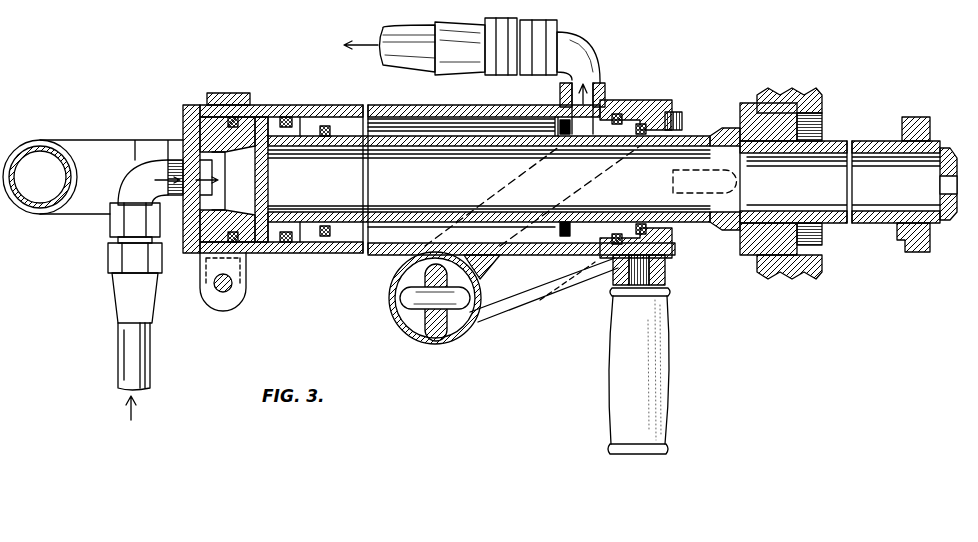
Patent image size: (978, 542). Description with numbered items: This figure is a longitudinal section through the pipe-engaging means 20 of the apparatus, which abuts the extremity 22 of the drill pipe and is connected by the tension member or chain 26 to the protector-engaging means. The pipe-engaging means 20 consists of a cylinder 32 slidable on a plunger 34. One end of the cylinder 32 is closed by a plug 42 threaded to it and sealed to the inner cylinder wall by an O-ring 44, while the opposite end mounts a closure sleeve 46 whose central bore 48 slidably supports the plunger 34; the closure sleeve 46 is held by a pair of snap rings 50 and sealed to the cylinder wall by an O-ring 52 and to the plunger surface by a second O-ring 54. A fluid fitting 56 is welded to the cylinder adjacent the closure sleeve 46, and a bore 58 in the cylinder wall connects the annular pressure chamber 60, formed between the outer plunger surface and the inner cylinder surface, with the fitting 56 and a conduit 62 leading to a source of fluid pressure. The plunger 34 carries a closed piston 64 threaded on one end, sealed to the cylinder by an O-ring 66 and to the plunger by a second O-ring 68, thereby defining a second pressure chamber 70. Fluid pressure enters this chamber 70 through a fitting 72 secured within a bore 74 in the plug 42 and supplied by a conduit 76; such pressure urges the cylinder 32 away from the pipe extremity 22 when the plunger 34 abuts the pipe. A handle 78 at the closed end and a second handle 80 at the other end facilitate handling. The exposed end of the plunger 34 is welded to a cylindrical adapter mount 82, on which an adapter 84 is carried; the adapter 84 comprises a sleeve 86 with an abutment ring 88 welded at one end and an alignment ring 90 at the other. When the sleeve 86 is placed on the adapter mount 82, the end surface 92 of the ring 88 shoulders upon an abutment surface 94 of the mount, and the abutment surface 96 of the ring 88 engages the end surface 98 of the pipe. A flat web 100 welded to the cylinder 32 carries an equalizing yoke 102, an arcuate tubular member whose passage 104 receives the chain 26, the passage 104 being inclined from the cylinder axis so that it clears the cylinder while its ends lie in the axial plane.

The pipe-engaging means 20 is at (322, 94).
The extremity of the drill pipe 22 is at (772, 94).
The tension member 26 is at (458, 306).
The cylinder 32 is at (356, 104).
The plunger 34 is at (404, 211).
The plug 42 is at (183, 124).
The O-ring 44 is at (250, 106).
The closure sleeve 46 is at (654, 110).
The central bore 48 is at (682, 114).
The snap ring 50 is at (609, 108).
The O-ring 52 is at (632, 116).
The O-ring 54 is at (613, 262).
The fluid fitting 56 is at (578, 50).
The bore 58 is at (562, 99).
The annular pressure chamber 60 is at (414, 120).
The conduit 62 is at (405, 30).
The piston 64 is at (262, 196).
The O-ring 66 is at (286, 253).
The O-ring 68 is at (324, 249).
The second pressure chamber 70 is at (203, 254).
The fitting 72 is at (138, 176).
The bore 74 is at (200, 103).
The conduit 76 is at (120, 358).
The handle 78 is at (42, 146).
The second handle 80 is at (622, 351).
The adapter mount 82 is at (936, 150).
The adapter 84 is at (874, 128).
The sleeve 86 is at (838, 141).
The abutment ring 88 is at (747, 100).
The alignment ring 90 is at (912, 116).
The end surface 92 is at (736, 119).
The abutment surface 94 is at (732, 230).
The abutment surface 96 is at (744, 264).
The end surface of the pipe 98 is at (756, 272).
The flat web 100 is at (490, 265).
The equalizing yoke 102 is at (398, 296).
The passage 104 is at (400, 318).